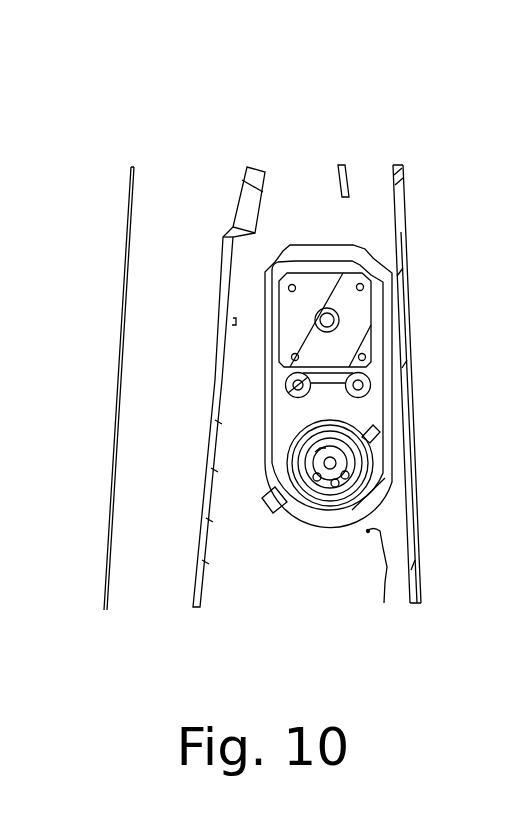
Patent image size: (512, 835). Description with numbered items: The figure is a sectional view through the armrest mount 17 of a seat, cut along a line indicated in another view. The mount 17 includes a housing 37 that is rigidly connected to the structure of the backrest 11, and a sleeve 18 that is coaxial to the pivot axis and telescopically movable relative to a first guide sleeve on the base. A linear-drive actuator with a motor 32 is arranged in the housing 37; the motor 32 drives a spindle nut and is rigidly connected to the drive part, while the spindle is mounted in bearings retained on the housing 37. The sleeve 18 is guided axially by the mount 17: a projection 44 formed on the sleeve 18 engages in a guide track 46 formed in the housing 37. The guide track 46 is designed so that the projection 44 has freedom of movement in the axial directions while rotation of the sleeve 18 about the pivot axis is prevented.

The backrest 11 is at (186, 205).
The mount 17 is at (240, 487).
The sleeve 18 is at (378, 488).
The motor 32 is at (352, 313).
The housing 37 is at (340, 247).
The projection 44 is at (293, 514).
The guide track 46 is at (268, 506).